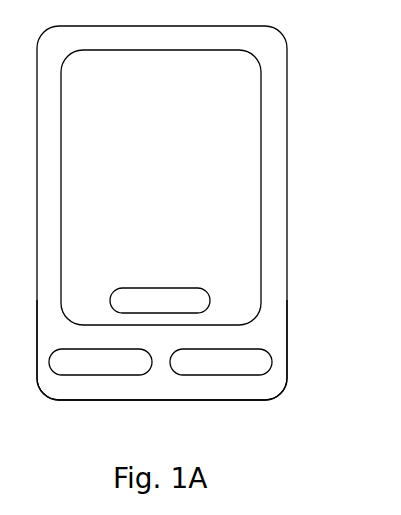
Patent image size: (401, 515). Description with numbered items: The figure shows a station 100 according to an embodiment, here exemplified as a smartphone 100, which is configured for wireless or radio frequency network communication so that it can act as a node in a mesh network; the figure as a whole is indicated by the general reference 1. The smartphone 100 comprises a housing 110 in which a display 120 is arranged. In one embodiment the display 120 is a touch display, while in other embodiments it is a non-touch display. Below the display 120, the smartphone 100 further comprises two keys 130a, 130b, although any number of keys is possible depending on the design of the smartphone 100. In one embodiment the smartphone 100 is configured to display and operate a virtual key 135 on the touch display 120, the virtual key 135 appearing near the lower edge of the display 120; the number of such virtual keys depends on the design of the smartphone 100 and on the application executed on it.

The mobile terminal 1 is at (316, 62).
The station 100 is at (309, 514).
The housing 110 is at (287, 126).
The display 120 is at (261, 190).
The virtual key 135 is at (210, 301).
The key 130a is at (101, 375).
The key 130b is at (272, 363).